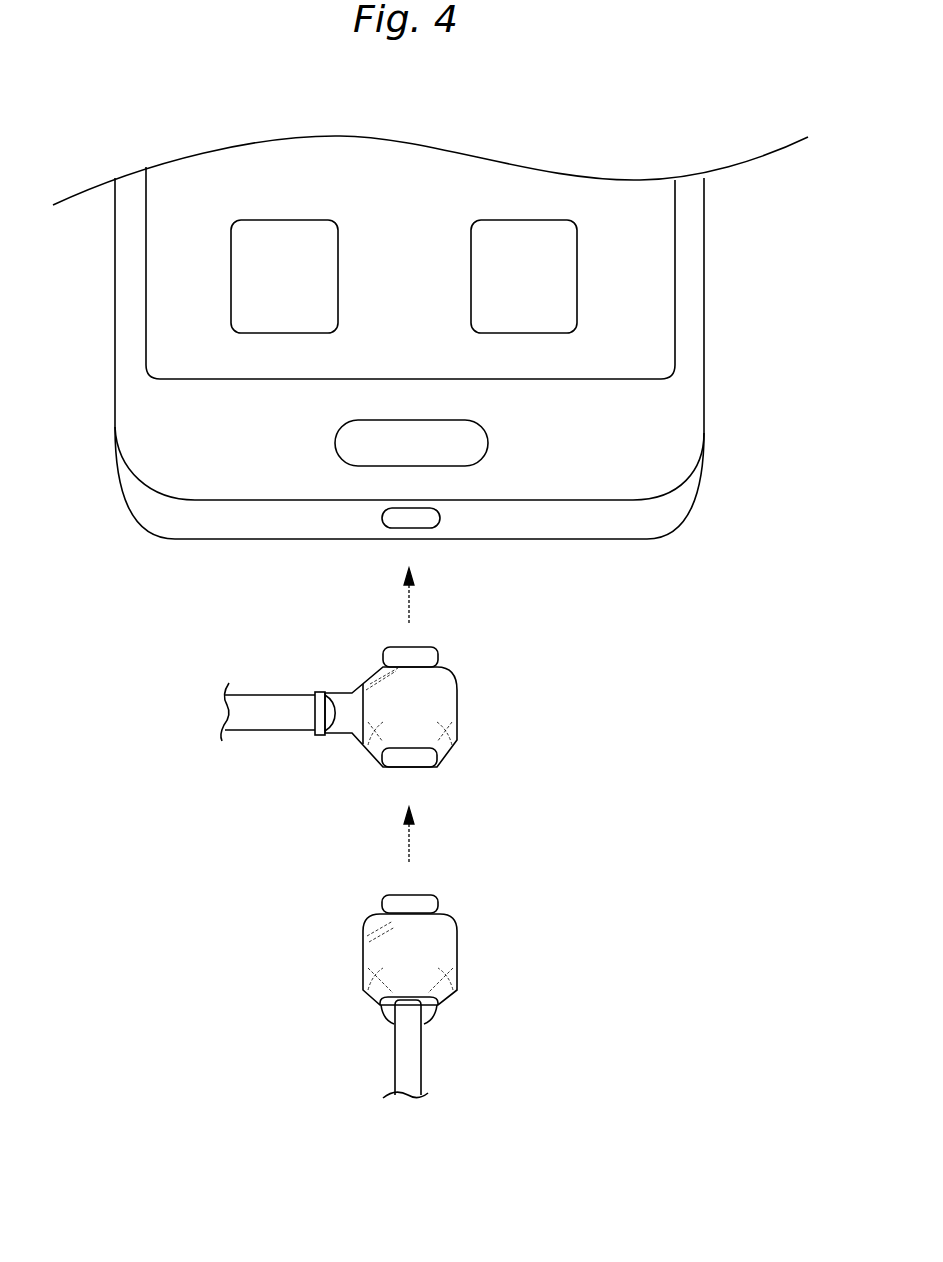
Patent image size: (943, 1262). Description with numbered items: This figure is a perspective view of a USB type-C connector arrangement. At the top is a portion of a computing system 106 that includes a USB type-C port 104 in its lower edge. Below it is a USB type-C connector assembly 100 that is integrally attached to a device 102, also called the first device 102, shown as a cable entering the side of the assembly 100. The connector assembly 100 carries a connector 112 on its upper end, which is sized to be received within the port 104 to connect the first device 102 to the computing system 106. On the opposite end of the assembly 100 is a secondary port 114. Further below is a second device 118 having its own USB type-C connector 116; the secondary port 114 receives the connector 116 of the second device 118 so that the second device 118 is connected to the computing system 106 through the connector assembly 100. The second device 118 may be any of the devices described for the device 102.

The USB type-C connector assembly 100 is at (437, 697).
The device 102 is at (275, 697).
The USB type-C port 104 is at (420, 522).
The computing system 106 is at (685, 487).
The connector 112 is at (437, 652).
The secondary port 114 is at (420, 760).
The USB type-C connector 116 is at (432, 896).
The second device 118 is at (415, 1070).